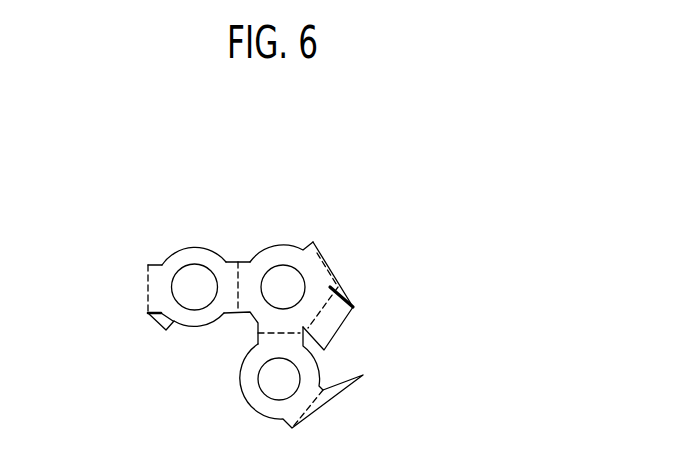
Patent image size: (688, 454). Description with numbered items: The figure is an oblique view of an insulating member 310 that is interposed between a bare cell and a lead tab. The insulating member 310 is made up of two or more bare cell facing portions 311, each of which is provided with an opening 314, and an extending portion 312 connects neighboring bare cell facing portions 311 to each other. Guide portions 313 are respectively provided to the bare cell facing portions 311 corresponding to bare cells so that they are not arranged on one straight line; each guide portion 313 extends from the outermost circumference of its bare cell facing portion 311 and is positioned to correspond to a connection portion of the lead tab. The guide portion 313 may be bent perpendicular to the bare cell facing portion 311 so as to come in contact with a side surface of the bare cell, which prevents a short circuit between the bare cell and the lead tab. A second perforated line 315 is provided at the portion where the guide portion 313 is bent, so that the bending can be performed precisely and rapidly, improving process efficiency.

The insulating member 310 is at (341, 192).
The bare cell facing portion 311 is at (193, 255).
The extending portion 312 is at (245, 263).
The guide portion 313 is at (158, 326).
The opening 314 is at (204, 285).
The second perforated line 315 is at (148, 287).